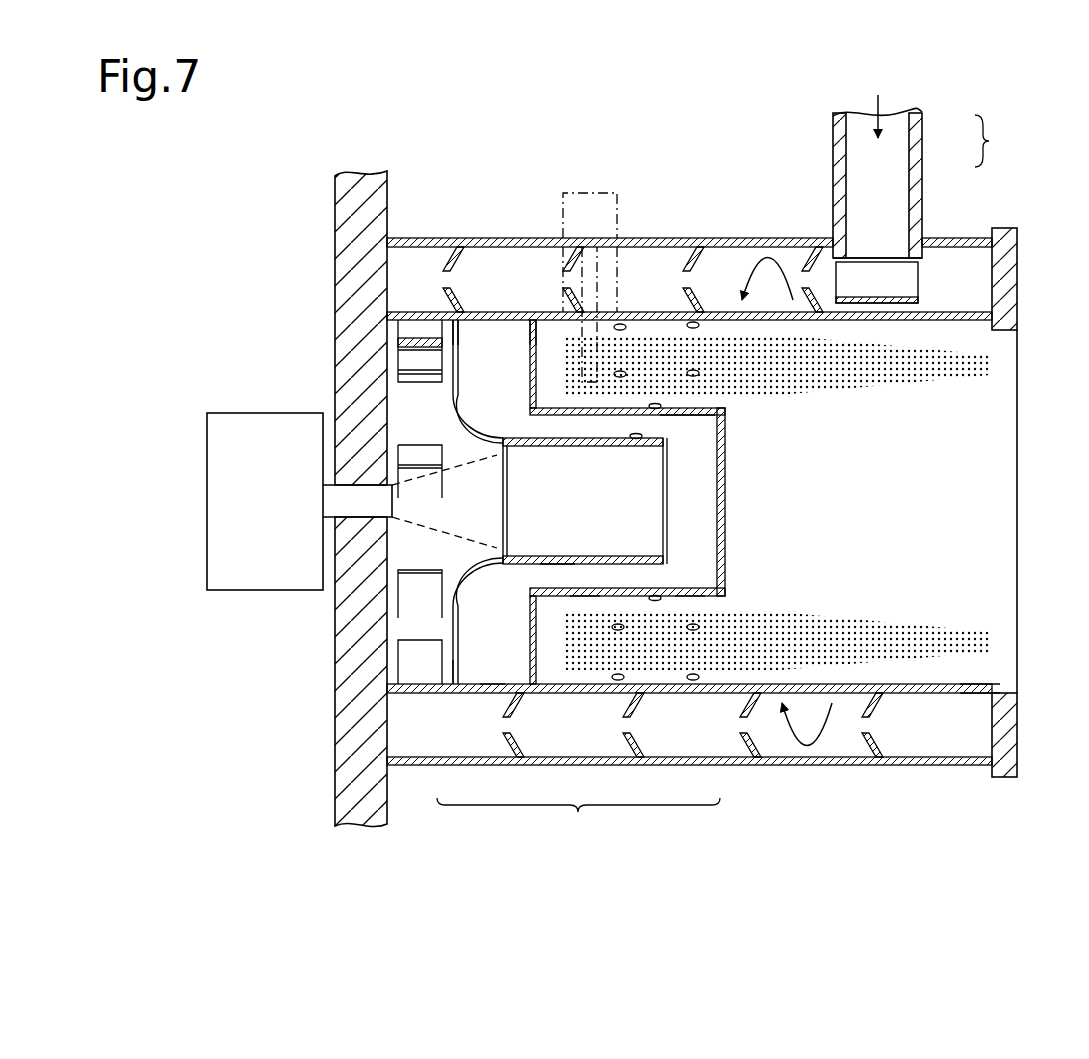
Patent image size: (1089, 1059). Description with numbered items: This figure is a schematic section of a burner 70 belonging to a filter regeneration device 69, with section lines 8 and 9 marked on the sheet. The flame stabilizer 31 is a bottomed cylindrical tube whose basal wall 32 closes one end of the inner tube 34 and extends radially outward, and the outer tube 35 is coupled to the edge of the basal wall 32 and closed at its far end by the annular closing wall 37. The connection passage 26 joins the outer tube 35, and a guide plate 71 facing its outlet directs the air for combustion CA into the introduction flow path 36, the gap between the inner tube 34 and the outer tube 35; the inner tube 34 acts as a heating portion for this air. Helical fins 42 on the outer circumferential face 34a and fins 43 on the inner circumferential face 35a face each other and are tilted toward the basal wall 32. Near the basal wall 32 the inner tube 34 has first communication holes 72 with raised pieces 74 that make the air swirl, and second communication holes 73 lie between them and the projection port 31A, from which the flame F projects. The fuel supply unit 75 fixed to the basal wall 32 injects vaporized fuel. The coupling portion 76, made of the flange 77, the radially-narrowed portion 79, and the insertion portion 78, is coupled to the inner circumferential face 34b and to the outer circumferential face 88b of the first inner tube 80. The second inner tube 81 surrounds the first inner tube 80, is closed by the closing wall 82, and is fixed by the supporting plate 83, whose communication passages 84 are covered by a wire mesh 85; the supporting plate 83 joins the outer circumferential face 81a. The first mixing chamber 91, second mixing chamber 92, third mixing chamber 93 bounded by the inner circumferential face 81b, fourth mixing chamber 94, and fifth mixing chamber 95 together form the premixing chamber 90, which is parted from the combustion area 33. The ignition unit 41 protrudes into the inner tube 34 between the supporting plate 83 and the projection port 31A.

The section line 8 is at (895, 82).
The section line 9 is at (415, 215).
The connection passage 26 is at (922, 135).
The flame stabilizer 31 is at (905, 694).
The projection port 31A is at (1000, 322).
The basal wall 32 is at (337, 315).
The combustion area 33 is at (1017, 486).
The inner tube 34 is at (1012, 690).
The outer circumferential face 34a is at (965, 694).
The inner circumferential face 34b is at (993, 682).
The outer tube 35 is at (978, 777).
The inner circumferential face 35a is at (965, 759).
The introduction flow path 36 is at (985, 317).
The annular closing wall 37 is at (1017, 250).
The ignition unit 41 is at (575, 194).
The fins 42 is at (702, 300).
The fins 43 is at (812, 240).
The filter regeneration device 69 is at (999, 141).
The burner 70 is at (937, 185).
The guide plate 71 is at (918, 295).
The first communication holes 72 is at (430, 316).
The second communication holes 73 is at (658, 313).
The raised piece 74 is at (398, 341).
The fuel supply unit 75 is at (228, 413).
The coupling portion 76 is at (476, 313).
The flange 77 is at (466, 368).
The insertion portion 78 is at (525, 448).
The radially-narrowed portion 79 is at (468, 423).
The first inner tube 80 is at (590, 448).
The second inner tube 81 is at (705, 416).
The outer circumferential face 81a is at (712, 412).
The inner circumferential face 81b is at (684, 416).
The closing wall 82 is at (725, 495).
The supporting plate 83 is at (526, 320).
The communication passages 84 is at (532, 373).
The wire mesh 85 is at (550, 311).
The outer circumferential face 88b is at (632, 448).
The premixing chamber 90 is at (578, 823).
The first mixing chamber 91 is at (447, 676).
The second mixing chamber 92 is at (556, 546).
The third mixing chamber 93 is at (690, 584).
The fourth mixing chamber 94 is at (585, 584).
The fifth mixing chamber 95 is at (493, 686).
The air for combustion CA is at (888, 108).
The flame F is at (838, 380).